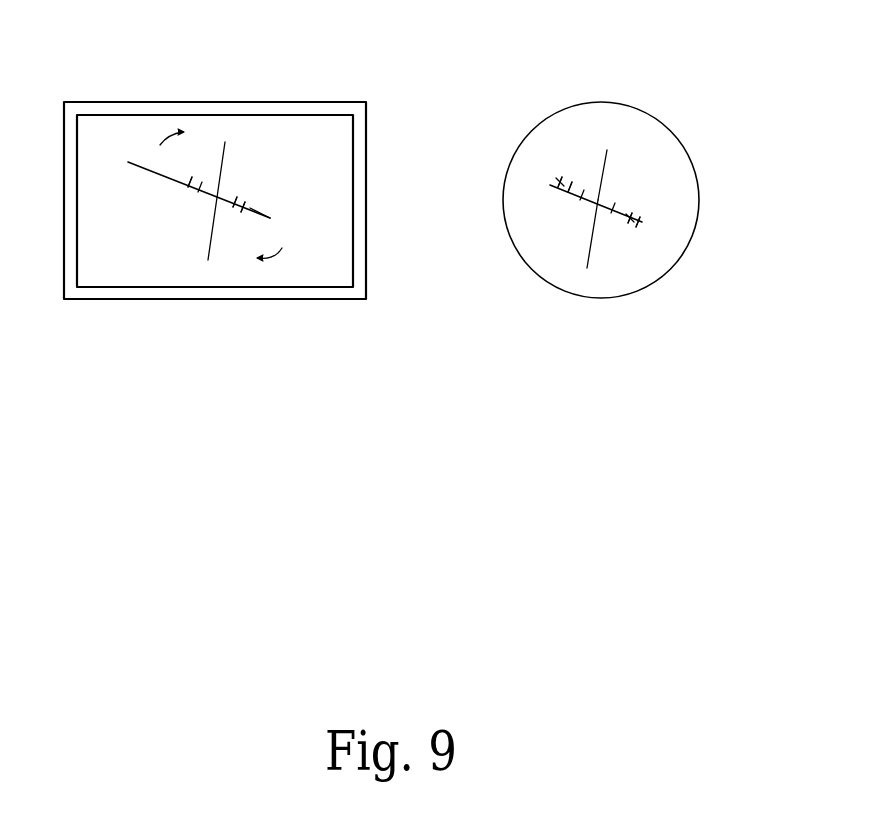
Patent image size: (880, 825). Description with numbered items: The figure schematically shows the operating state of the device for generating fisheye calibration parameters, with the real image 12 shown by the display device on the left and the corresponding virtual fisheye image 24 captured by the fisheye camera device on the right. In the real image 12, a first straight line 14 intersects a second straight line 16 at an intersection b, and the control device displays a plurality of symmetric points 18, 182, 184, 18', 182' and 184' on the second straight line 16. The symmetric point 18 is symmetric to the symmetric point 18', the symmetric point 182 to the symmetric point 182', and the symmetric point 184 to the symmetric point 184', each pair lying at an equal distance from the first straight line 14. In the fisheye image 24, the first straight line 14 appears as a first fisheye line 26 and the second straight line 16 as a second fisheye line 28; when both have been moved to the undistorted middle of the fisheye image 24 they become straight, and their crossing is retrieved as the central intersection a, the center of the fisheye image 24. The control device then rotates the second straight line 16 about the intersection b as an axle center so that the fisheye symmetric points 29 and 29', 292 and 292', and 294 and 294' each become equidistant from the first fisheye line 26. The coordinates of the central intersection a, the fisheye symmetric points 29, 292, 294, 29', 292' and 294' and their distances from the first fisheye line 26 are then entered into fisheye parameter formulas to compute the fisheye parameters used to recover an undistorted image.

The real image 12 is at (140, 113).
The first straight line 14 is at (208, 240).
The second straight line 16 is at (252, 207).
The symmetric point 18 is at (168, 191).
The symmetric point 18' is at (252, 221).
The symmetric point 182 is at (208, 152).
The symmetric point 182' is at (252, 173).
The symmetric point 184 is at (179, 182).
The symmetric point 184' is at (285, 167).
The intersection b is at (207, 199).
The fisheye image 24 is at (702, 197).
The first fisheye line 26 is at (593, 250).
The second fisheye line 28 is at (578, 183).
The fisheye symmetric point 29 is at (525, 217).
The fisheye symmetric point 29' is at (678, 223).
The fisheye symmetric point 292 is at (506, 188).
The fisheye symmetric point 292' is at (667, 260).
The fisheye symmetric point 294 is at (512, 151).
The fisheye symmetric point 294' is at (695, 247).
The central intersection a is at (603, 197).